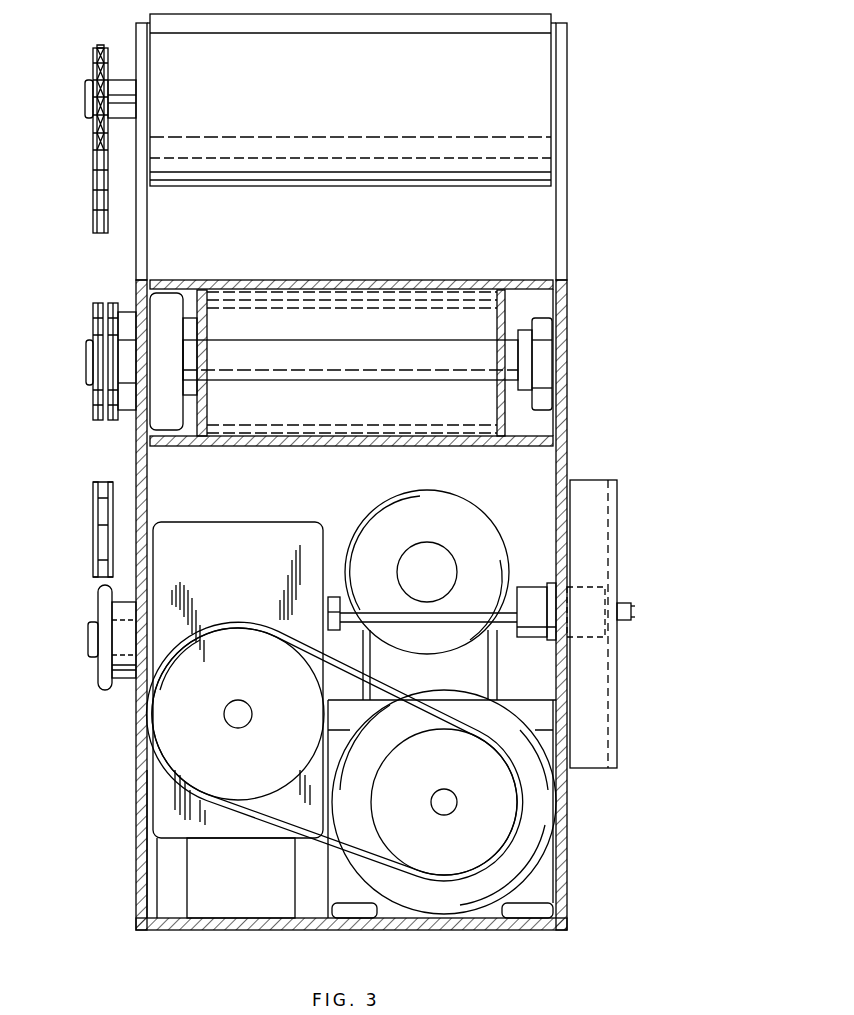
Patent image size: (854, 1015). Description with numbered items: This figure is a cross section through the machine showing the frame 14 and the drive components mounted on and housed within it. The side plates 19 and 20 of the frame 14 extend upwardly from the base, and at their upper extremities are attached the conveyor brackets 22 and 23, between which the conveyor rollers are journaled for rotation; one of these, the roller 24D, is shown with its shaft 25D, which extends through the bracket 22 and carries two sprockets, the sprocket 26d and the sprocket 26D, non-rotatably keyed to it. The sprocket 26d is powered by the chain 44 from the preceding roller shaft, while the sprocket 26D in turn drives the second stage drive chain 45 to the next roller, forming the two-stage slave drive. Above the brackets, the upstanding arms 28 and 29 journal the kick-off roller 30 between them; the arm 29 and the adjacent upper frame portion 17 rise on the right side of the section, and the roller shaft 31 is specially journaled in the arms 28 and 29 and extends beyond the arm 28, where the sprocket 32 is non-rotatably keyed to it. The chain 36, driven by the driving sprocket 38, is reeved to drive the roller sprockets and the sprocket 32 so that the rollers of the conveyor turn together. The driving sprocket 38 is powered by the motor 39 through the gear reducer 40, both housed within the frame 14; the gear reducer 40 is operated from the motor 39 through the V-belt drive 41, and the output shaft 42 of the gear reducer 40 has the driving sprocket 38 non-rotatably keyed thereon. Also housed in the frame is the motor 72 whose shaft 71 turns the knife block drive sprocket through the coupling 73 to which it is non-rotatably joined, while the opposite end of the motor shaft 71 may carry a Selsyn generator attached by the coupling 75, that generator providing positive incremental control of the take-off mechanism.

The frame 14 is at (136, 876).
The frame side plate 17 is at (567, 87).
The side plate 19 is at (136, 820).
The side plate 20 is at (568, 816).
The conveyor bracket 22 is at (136, 466).
The conveyor bracket 23 is at (567, 438).
The roller 24D is at (346, 280).
The shaft 25D is at (350, 366).
The sprocket 26D is at (98, 333).
The sprocket 26d is at (118, 332).
The upstanding arm 28 is at (147, 216).
The upstanding arm 29 is at (567, 228).
The kick-off roller 30 is at (412, 71).
The shaft 31 is at (85, 98).
The sprocket 32 is at (93, 63).
The chain 36 is at (93, 550).
The driving sprocket 38 is at (98, 676).
The motor 39 is at (523, 838).
The gear reducer 40 is at (236, 579).
The V-belt drive 41 is at (280, 835).
The output shaft 42 is at (88, 638).
The chain 44 is at (118, 412).
The second stage drive chain 45 is at (93, 408).
The shaft 71 is at (500, 640).
The motor 72 is at (433, 525).
The coupling 73 is at (535, 590).
The coupling 75 is at (334, 597).